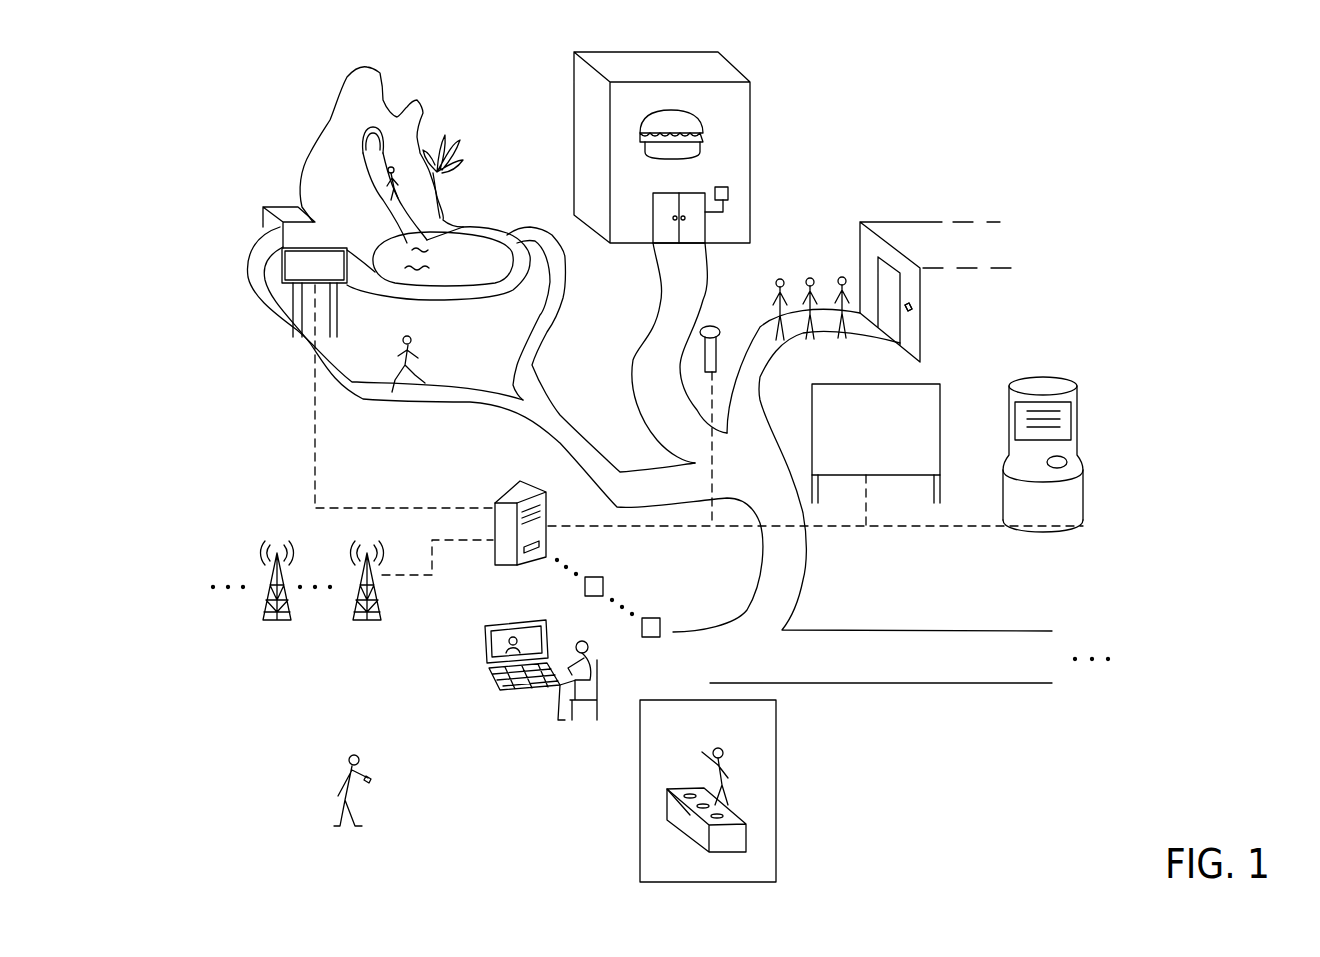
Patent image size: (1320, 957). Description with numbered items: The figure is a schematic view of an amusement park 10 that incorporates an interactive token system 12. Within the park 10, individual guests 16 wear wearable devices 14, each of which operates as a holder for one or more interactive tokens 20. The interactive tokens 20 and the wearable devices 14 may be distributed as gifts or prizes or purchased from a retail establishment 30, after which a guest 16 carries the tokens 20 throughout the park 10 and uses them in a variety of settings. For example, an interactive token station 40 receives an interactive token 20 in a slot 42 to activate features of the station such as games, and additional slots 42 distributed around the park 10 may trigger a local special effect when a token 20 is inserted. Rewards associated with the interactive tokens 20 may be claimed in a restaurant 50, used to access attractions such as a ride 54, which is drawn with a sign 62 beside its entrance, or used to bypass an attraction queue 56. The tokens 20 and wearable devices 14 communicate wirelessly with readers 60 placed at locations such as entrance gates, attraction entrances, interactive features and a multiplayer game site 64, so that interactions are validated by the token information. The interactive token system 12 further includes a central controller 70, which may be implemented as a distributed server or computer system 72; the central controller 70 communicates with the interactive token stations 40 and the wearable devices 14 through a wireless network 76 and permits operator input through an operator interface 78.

The amusement park 10 is at (212, 422).
The interactive token system 12 is at (295, 520).
The wearable device 14 is at (697, 757).
The guest 16 is at (358, 764).
The interactive token 20 is at (670, 820).
The retail establishment 30 is at (776, 790).
The interactive token station 40 is at (1050, 375).
The slot 42 is at (713, 327).
The restaurant 50 is at (718, 62).
The ride 54 is at (330, 118).
The attraction queue 56 is at (842, 276).
The reader 60 is at (722, 187).
The sign 62 is at (310, 248).
The multiplayer game site 64 is at (940, 430).
The central controller 70 is at (500, 462).
The distributed server or computer system 72 is at (617, 573).
The wireless network 76 is at (290, 617).
The operator interface 78 is at (525, 717).